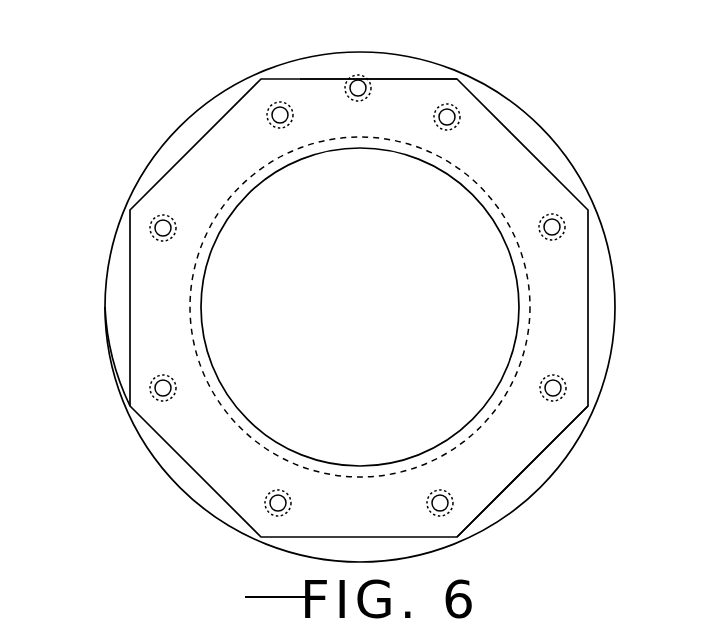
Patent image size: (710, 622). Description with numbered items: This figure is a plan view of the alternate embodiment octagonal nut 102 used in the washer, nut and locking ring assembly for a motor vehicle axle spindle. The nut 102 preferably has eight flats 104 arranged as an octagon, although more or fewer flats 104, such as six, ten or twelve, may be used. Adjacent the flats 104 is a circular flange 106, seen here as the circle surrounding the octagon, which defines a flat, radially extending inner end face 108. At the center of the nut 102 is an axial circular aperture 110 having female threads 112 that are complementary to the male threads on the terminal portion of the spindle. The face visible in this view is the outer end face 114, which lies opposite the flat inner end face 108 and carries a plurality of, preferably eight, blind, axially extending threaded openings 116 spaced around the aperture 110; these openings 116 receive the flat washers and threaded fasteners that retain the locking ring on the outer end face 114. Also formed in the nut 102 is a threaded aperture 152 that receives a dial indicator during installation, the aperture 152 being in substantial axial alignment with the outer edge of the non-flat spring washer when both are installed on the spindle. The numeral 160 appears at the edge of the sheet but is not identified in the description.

The octagonal nut 102 is at (403, 107).
The flats 104 is at (588, 255).
The circular flange 106 is at (615, 297).
The inner end face 108 is at (110, 368).
The axial circular aperture 110 is at (375, 314).
The female threads 112 is at (477, 197).
The outer end face 114 is at (503, 440).
The threaded openings 116 is at (265, 500).
The threaded aperture 152 is at (347, 87).
The housing 160 is at (627, 617).